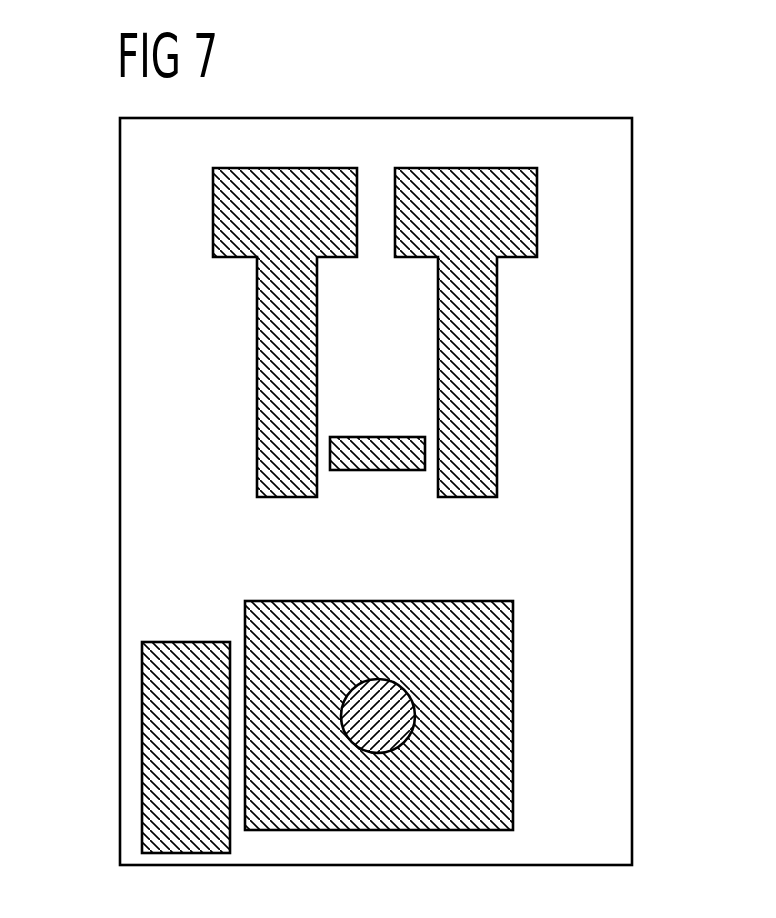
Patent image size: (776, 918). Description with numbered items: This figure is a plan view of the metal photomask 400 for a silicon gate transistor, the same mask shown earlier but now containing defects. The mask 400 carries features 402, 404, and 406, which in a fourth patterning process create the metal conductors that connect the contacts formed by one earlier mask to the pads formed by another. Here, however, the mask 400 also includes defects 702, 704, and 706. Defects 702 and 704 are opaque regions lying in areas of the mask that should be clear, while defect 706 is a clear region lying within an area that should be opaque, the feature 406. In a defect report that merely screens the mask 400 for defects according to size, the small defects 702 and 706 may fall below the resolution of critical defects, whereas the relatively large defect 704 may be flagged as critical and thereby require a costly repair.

The metal photomask 400 is at (686, 120).
The feature 402 is at (268, 385).
The feature 404 is at (482, 373).
The feature 406 is at (402, 615).
The defect 702 is at (378, 447).
The defect 704 is at (190, 647).
The defect 706 is at (397, 715).